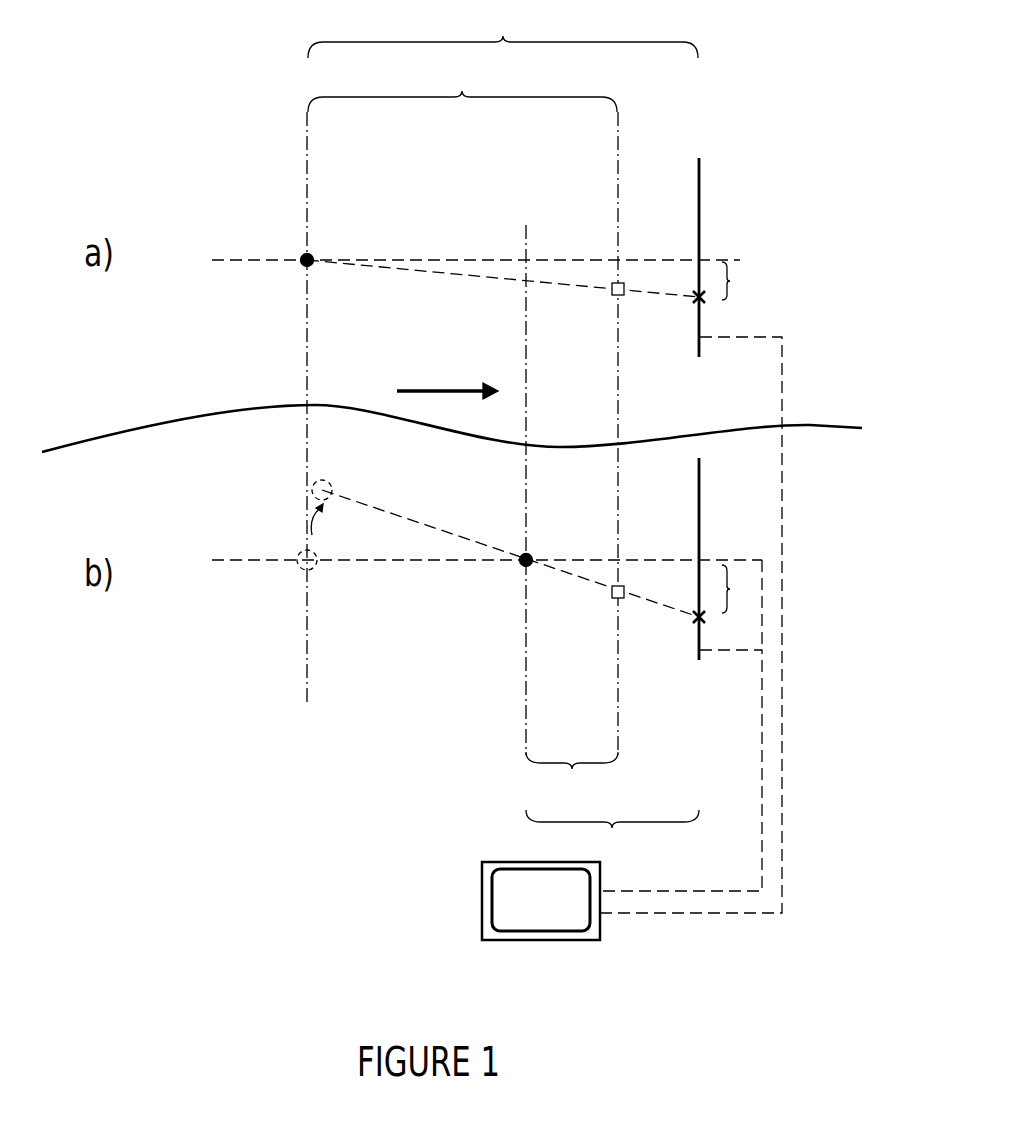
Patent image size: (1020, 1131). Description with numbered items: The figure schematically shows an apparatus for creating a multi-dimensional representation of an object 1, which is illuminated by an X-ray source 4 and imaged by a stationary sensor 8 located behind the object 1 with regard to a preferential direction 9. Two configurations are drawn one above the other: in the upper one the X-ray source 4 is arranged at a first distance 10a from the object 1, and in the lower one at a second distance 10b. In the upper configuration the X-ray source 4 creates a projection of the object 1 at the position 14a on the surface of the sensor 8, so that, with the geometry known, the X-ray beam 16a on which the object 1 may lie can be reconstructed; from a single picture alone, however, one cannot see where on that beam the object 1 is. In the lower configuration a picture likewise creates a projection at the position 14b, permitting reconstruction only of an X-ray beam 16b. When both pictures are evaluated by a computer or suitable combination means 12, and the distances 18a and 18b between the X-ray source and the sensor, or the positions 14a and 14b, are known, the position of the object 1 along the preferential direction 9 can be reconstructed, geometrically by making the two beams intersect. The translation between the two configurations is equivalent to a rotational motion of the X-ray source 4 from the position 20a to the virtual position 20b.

The object 1 is at (617, 296).
The X-ray source 4 is at (311, 254).
The sensor 8 is at (700, 185).
The preferential direction 9 is at (398, 390).
The first distance 10a is at (462, 87).
The second distance 10b is at (572, 774).
The combination means 12 is at (600, 928).
The position 14a is at (702, 302).
The position 14b is at (696, 620).
The X-ray beam 16a is at (498, 278).
The X-ray beam 16b is at (418, 522).
The distance 18a is at (503, 33).
The distance 18b is at (612, 833).
The position 20a is at (300, 566).
The virtual position 20b is at (312, 493).